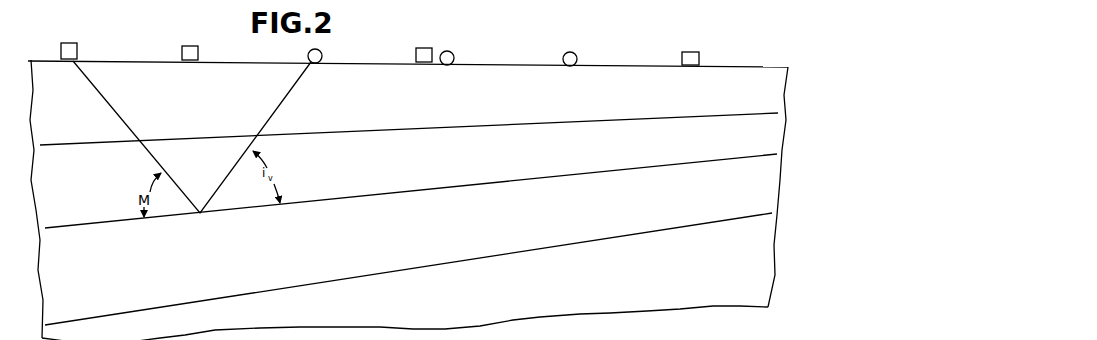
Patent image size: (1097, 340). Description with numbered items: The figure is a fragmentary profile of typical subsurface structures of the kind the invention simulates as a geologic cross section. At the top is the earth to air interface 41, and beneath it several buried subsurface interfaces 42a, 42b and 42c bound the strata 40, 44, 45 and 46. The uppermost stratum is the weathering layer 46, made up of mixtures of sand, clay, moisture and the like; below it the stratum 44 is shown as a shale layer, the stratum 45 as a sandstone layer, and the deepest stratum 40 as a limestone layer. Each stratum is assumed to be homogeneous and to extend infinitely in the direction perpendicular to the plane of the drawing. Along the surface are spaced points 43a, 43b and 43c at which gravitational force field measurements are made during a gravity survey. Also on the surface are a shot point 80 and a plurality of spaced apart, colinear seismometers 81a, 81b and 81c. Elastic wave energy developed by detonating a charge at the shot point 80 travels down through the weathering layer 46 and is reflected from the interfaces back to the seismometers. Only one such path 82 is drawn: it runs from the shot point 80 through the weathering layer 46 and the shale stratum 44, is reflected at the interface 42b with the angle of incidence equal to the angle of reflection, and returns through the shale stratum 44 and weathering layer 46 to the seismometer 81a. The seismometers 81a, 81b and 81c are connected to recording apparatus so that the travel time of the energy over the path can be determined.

The stratum 40 is at (311, 308).
The earth to air interface 41 is at (130, 61).
The subsurface interface 42a is at (238, 136).
The subsurface interface 42b is at (264, 206).
The subsurface interface 42c is at (266, 288).
The point 43a is at (207, 30).
The point 43b is at (453, 35).
The point 43c is at (713, 40).
The shale stratum 44 is at (95, 200).
The sandstone stratum 45 is at (181, 272).
The weathering layer 46 is at (170, 114).
The shot point 80 is at (73, 43).
The seismometer 81a is at (365, 54).
The seismometer 81b is at (500, 57).
The seismometer 81c is at (617, 47).
The path 82 is at (128, 84).